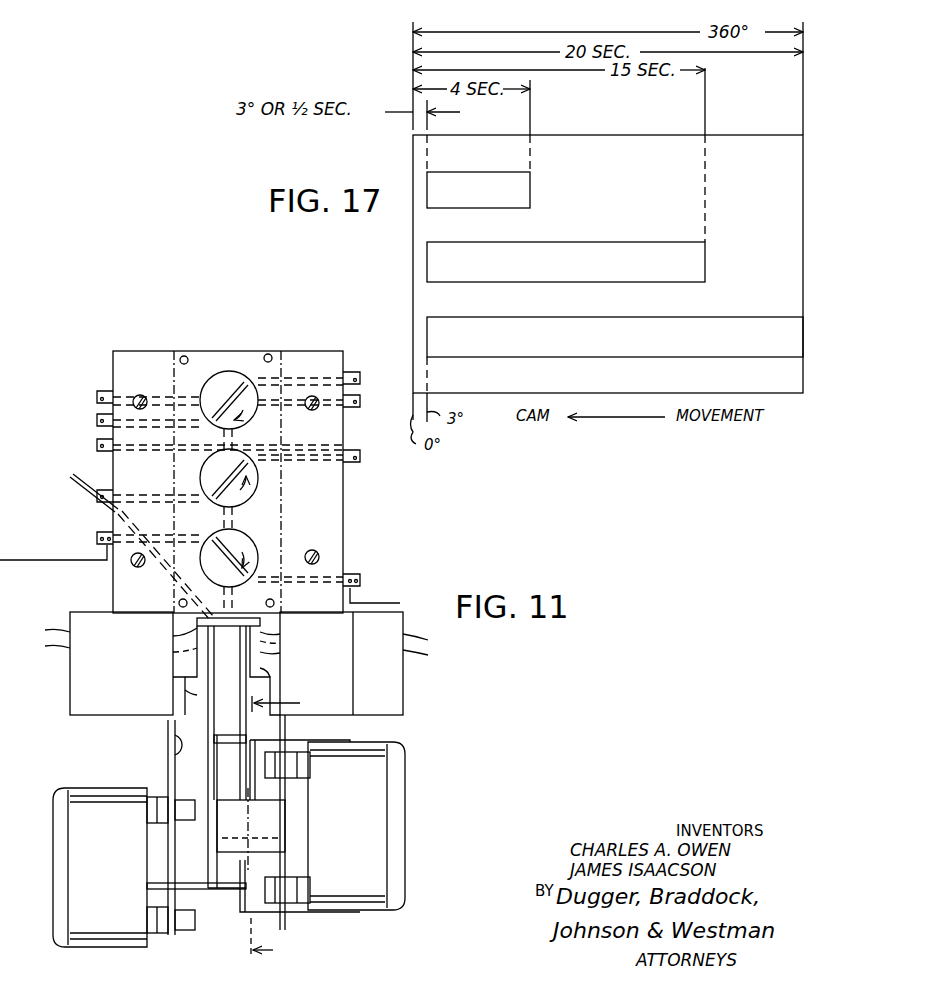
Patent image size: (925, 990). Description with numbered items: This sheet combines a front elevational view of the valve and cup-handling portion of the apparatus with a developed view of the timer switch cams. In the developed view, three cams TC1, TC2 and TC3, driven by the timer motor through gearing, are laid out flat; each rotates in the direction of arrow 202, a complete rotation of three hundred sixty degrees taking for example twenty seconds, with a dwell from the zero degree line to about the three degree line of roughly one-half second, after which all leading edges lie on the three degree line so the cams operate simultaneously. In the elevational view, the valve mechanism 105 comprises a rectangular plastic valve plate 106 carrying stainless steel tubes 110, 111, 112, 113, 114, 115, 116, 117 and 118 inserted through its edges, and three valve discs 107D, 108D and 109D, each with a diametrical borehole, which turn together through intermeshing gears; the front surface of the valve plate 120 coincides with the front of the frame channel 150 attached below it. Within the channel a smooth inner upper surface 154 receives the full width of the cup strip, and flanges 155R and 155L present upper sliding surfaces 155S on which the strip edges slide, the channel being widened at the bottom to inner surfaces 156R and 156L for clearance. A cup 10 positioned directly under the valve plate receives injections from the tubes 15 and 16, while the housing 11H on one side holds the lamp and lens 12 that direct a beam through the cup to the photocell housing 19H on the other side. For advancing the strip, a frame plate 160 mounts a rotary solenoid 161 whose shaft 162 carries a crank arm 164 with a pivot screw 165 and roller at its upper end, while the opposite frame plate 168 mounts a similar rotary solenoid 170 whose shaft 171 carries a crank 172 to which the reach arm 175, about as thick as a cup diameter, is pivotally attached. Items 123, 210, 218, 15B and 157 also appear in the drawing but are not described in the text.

In FIG. 17, the timer cam TC1 is at (520, 194).
In FIG. 17, the timer cam TC2 is at (627, 258).
In FIG. 17, the timer cam TC3 is at (731, 334).
In FIG. 17, the direction-of-rotation arrow 202 is at (612, 418).
In FIG. 11, the valve mechanism 105 is at (242, 372).
In FIG. 11, the valve plate 106 is at (282, 380).
In FIG. 11, the valve disc 107D is at (236, 540).
In FIG. 11, the valve disc 108D is at (201, 474).
In FIG. 11, the valve disc 109D is at (226, 382).
In FIG. 11, the stainless steel tube 110 is at (356, 579).
In FIG. 11, the stainless steel tube 111 is at (356, 458).
In FIG. 11, the stainless steel tube 112 is at (354, 406).
In FIG. 11, the stainless steel tube 113 is at (356, 378).
In FIG. 11, the stainless steel tube 114 is at (99, 539).
In FIG. 11, the stainless steel tube 115 is at (99, 497).
In FIG. 11, the stainless steel tube 116 is at (99, 446).
In FIG. 11, the stainless steel tube 117 is at (99, 421).
In FIG. 11, the stainless steel tube 118 is at (101, 393).
In FIG. 11, the valve plate 120 is at (325, 495).
In FIG. 11, the mounting screw 123 is at (142, 395).
In FIG. 11, the tube 15 is at (300, 568).
In FIG. 11, the tube 16 is at (76, 480).
In FIG. 11, the wire 210 is at (53, 549).
In FIG. 11, the wire 218 is at (396, 603).
In FIG. 11, the housing 19H is at (75, 620).
In FIG. 11, the housing 11H is at (352, 639).
In FIG. 11, the inner upper surface 154 is at (236, 616).
In FIG. 11, the upper sliding surface 155S is at (200, 632).
In FIG. 11, the flange 155L is at (196, 650).
In FIG. 11, the flange 155R is at (258, 664).
In FIG. 11, the contact blade 15B is at (262, 656).
In FIG. 11, the cup 10 is at (230, 646).
In FIG. 11, the frame channel 150 is at (196, 660).
In FIG. 11, the inner surface 156R is at (266, 698).
In FIG. 11, the inner surface 156L is at (186, 702).
In FIG. 11, the reach arm 175 is at (224, 684).
In FIG. 11, the lens 12 is at (288, 827).
In FIG. 11, the mounting plate 157 is at (168, 730).
In FIG. 11, the pivot screw 165 is at (192, 745).
In FIG. 11, the crank 172 is at (208, 773).
In FIG. 11, the frame plate 168 is at (282, 796).
In FIG. 11, the crank arm 164 is at (288, 838).
In FIG. 11, the shaft 171 is at (236, 858).
In FIG. 11, the shaft 162 is at (204, 890).
In FIG. 11, the frame plate 160 is at (156, 878).
In FIG. 11, the rotary solenoid 161 is at (104, 865).
In FIG. 11, the rotary solenoid 170 is at (366, 840).